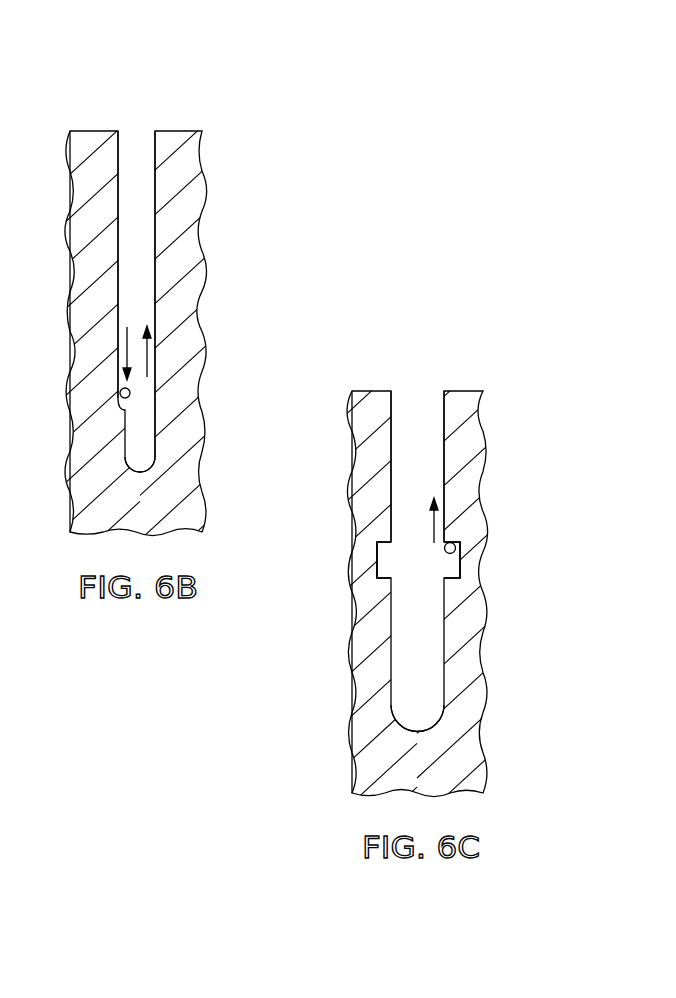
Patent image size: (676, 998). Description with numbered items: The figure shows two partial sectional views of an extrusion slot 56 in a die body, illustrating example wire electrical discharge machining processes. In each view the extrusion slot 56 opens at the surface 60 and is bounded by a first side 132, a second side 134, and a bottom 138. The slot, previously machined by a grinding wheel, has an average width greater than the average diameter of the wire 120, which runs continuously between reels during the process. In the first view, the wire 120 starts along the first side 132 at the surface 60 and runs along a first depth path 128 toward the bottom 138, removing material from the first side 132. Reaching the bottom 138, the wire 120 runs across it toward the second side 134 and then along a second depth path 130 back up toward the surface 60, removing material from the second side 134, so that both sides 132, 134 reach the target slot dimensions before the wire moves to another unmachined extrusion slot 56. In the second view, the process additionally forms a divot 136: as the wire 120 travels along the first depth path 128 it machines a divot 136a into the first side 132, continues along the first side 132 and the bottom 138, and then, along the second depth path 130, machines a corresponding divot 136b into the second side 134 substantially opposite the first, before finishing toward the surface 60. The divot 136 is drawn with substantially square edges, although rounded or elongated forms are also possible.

In FIG. 6B, the surface 60 is at (178, 128).
In FIG. 6C, the surface 60 is at (470, 389).
In FIG. 6B, the first side 132 is at (120, 277).
In FIG. 6C, the first side 132 is at (393, 463).
In FIG. 6B, the second side 134 is at (157, 250).
In FIG. 6C, the second side 134 is at (442, 456).
In FIG. 6B, the first depth path 128 is at (118, 350).
In FIG. 6B, the second depth path 130 is at (155, 355).
In FIG. 6C, the second depth path 130 is at (433, 542).
In FIG. 6B, the wire 120 is at (120, 393).
In FIG. 6C, the wire 120 is at (456, 550).
In FIG. 6B, the extrusion slot 56 is at (112, 448).
In FIG. 6C, the extrusion slot 56 is at (380, 675).
In FIG. 6B, the bottom 138 is at (143, 474).
In FIG. 6C, the bottom 138 is at (420, 733).
In FIG. 6C, the divot 136 is at (403, 535).
In FIG. 6C, the divot 136a is at (378, 562).
In FIG. 6C, the divot 136b is at (460, 580).